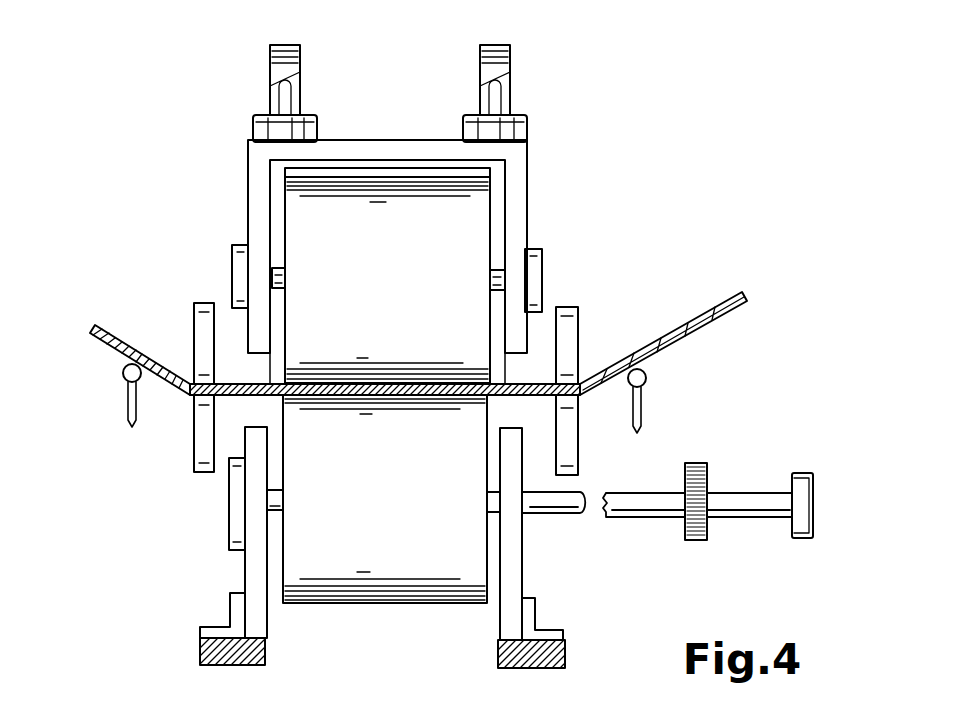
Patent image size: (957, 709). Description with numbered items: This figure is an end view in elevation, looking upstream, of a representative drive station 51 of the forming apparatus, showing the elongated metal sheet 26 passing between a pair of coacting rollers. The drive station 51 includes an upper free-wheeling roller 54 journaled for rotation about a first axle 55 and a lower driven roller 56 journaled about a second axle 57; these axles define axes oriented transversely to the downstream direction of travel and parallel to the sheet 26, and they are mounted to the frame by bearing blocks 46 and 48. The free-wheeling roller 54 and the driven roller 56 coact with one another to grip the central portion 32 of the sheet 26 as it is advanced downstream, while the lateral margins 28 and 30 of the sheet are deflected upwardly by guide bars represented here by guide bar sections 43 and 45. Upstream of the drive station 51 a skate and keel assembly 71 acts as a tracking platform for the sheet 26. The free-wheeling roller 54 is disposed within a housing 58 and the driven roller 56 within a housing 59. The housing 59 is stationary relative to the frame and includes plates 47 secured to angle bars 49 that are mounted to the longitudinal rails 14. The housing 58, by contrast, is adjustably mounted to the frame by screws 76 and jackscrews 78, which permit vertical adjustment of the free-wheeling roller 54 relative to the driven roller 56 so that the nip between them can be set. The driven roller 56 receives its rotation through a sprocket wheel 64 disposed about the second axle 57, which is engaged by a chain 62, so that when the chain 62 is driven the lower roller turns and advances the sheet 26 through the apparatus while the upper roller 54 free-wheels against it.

The longitudinal rails 14 is at (228, 664).
The sheet 26 is at (742, 344).
The lateral margin 28 is at (118, 332).
The lateral margin 30 is at (736, 307).
The central portion 32 is at (378, 383).
The guide bar section 43 is at (122, 373).
The guide bar section 45 is at (647, 378).
The bearing block 46 is at (806, 495).
The plates 47 is at (263, 613).
The bearing block 48 is at (240, 245).
The angle bars 49 is at (230, 618).
The drive station 51 is at (688, 195).
The free-wheeling roller 54 is at (388, 279).
The first axle 55 is at (278, 271).
The driven roller 56 is at (388, 517).
The second axle 57 is at (632, 512).
The housing 58 is at (513, 264).
The housing 59 is at (215, 564).
The chain 62 is at (697, 540).
The sprocket wheel 64 is at (700, 463).
The skate and keel assembly 71 is at (200, 325).
The screws 76 is at (293, 56).
The jackscrews 78 is at (310, 113).